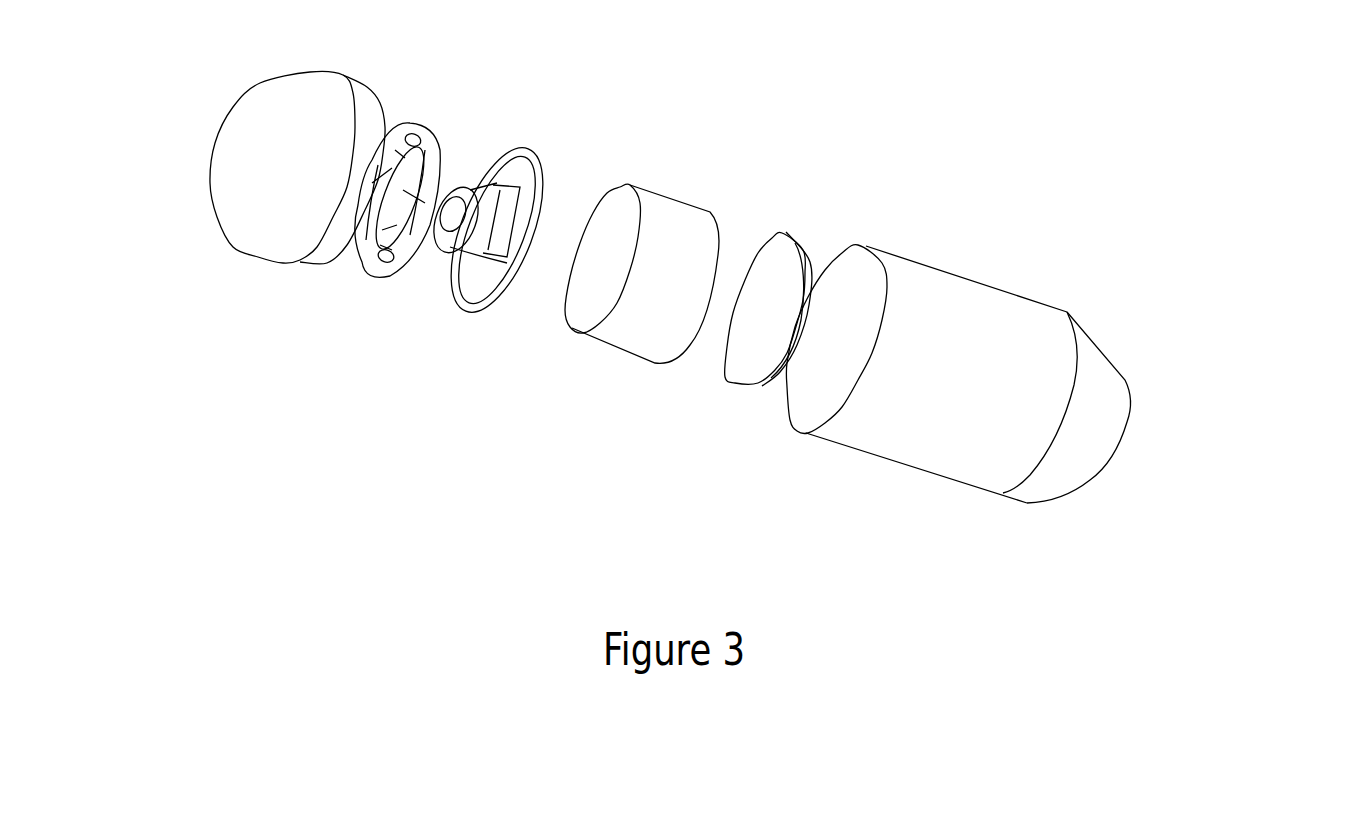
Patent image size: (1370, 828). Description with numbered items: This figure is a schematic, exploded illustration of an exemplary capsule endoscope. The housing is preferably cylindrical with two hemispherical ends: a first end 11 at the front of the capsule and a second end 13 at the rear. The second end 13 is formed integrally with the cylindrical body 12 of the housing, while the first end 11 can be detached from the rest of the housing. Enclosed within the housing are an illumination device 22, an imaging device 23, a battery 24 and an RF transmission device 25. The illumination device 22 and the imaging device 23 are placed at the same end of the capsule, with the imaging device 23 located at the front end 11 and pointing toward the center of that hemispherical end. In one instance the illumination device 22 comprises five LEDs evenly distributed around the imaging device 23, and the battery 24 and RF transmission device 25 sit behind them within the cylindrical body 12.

The first end 11 is at (236, 206).
The cylindrical body 12 is at (997, 311).
The second end 13 is at (1115, 408).
The illumination device 22 is at (366, 258).
The imaging device 23 is at (461, 252).
The battery 24 is at (648, 336).
The RF transmission device 25 is at (796, 229).